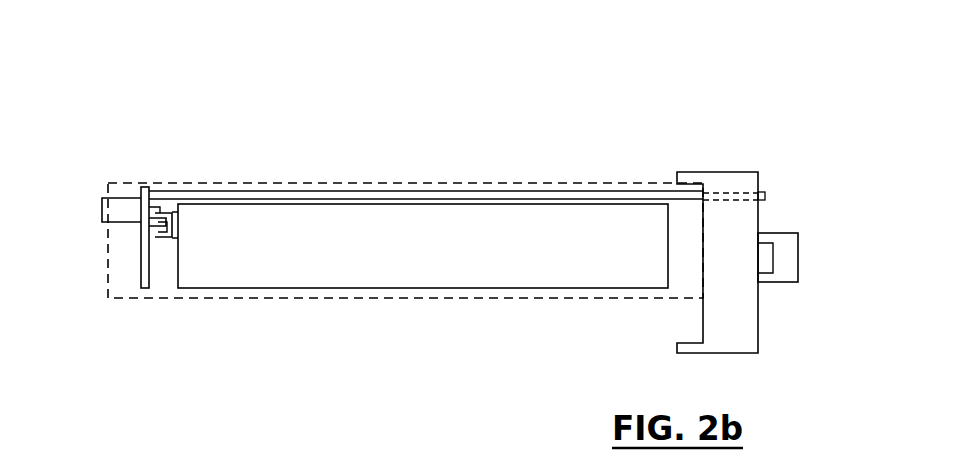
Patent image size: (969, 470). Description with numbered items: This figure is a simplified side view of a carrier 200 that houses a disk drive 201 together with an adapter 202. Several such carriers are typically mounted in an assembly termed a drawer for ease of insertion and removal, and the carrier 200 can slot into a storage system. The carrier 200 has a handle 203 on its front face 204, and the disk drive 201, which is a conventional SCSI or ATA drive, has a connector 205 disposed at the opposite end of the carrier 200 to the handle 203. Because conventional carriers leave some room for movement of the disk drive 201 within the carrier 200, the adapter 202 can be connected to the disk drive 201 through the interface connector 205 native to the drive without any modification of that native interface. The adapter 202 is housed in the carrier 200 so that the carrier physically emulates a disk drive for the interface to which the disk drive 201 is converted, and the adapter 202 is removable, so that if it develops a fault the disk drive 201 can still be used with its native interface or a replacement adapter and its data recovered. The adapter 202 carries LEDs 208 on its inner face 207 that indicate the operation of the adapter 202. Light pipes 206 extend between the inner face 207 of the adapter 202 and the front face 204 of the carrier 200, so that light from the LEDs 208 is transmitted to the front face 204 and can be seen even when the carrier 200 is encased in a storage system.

The carrier 200 is at (128, 83).
The disk drive 201 is at (403, 215).
The adapter 202 is at (138, 198).
The handle 203 is at (783, 228).
The front face 204 is at (763, 213).
The connector 205 is at (180, 218).
The light pipes 206 is at (540, 198).
The inner face 207 is at (157, 201).
The LEDs 208 is at (155, 203).